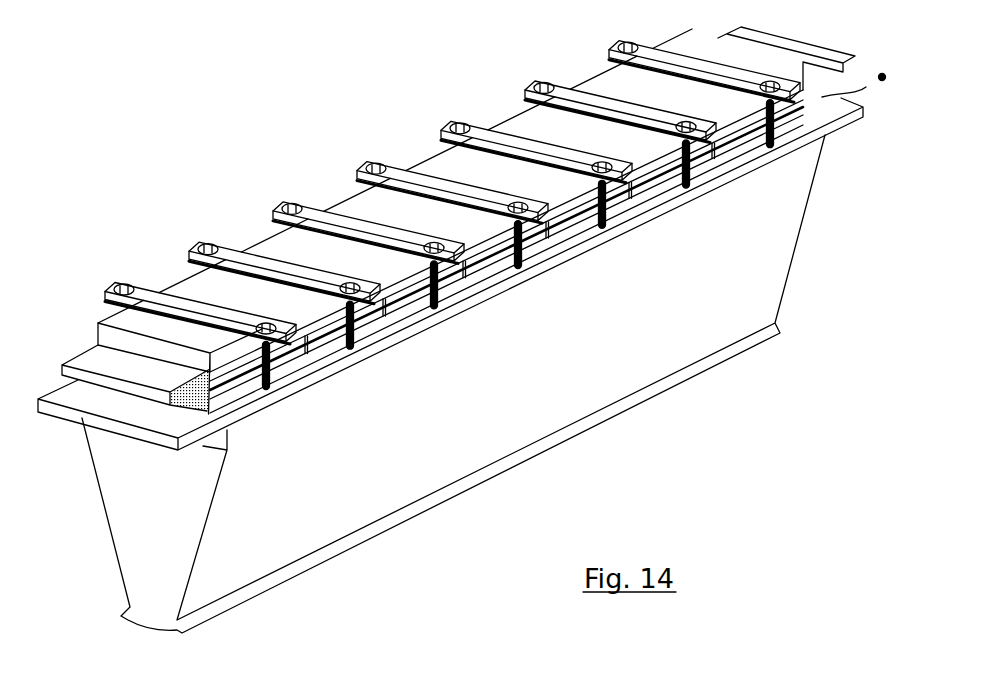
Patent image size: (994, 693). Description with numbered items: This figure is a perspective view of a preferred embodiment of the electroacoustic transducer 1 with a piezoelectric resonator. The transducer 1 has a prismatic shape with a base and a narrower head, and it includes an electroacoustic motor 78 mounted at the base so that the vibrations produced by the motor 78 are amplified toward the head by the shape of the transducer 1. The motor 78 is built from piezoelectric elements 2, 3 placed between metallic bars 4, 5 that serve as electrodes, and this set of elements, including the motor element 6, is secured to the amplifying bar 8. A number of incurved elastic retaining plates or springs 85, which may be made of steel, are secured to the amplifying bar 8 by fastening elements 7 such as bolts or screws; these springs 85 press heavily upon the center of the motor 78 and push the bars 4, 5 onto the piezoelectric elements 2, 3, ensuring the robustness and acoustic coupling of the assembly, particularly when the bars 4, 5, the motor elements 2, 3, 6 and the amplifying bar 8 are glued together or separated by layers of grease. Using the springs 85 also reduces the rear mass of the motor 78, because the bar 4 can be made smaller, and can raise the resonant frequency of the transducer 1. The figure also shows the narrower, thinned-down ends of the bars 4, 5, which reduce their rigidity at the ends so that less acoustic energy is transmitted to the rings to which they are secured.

The electroacoustic transducer 1 is at (453, 384).
The piezoelectric element 2 is at (443, 277).
The piezoelectric element 3 is at (528, 250).
The metallic bar 4 is at (85, 345).
The metallic bar 5 is at (73, 420).
The motor element 6 is at (866, 87).
The fastening element 7 is at (362, 342).
The amplifying bar 8 is at (353, 476).
The electroacoustic motor 78 is at (452, 217).
The incurved retaining plate or spring 85 is at (310, 278).